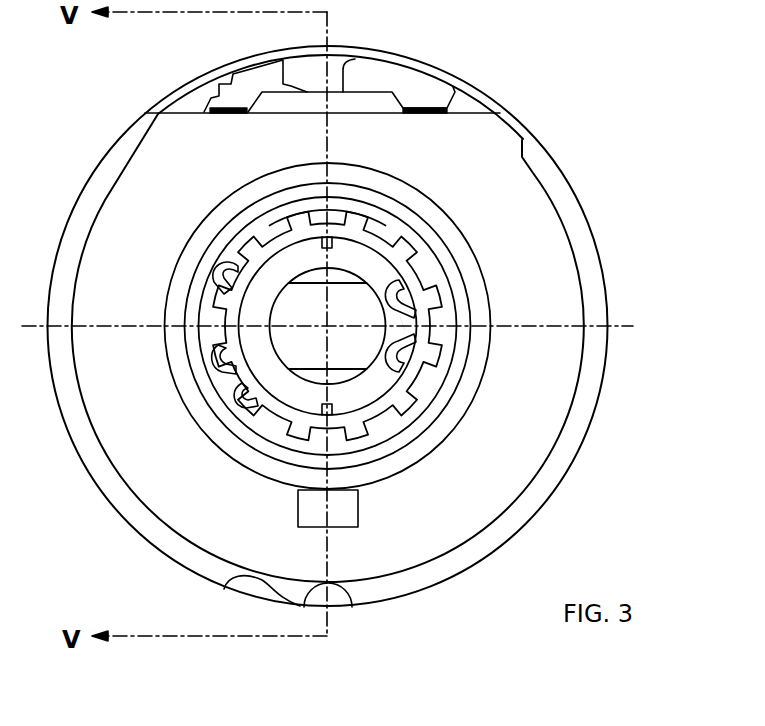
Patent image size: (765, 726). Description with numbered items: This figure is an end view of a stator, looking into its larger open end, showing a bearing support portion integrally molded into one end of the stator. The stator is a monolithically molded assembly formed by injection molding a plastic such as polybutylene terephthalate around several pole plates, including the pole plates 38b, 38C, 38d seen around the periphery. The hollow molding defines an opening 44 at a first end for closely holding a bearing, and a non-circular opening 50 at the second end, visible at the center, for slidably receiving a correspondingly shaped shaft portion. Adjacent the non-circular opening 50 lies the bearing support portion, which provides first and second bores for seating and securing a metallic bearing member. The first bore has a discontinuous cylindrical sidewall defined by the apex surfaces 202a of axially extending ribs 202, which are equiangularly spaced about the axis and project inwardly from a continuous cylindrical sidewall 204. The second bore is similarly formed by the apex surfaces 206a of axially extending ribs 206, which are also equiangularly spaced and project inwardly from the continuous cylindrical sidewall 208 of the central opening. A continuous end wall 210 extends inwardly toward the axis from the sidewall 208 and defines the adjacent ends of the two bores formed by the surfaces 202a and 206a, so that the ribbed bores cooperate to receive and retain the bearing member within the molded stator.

The pole plate 38b is at (342, 607).
The pole plate 38C is at (197, 88).
The pole plate 38d is at (147, 521).
The opening 44 is at (398, 440).
The non-circular opening 50 is at (368, 321).
The axially-extending ribs 202 is at (400, 281).
The apex surfaces 202a is at (405, 330).
The continuous cylindrical sidewall 204 is at (378, 262).
The axially-extending ribs 206 is at (214, 346).
The apex surfaces 206a is at (238, 396).
The continuous cylindrical sidewall 208 is at (224, 254).
The continuous end wall 210 is at (247, 195).